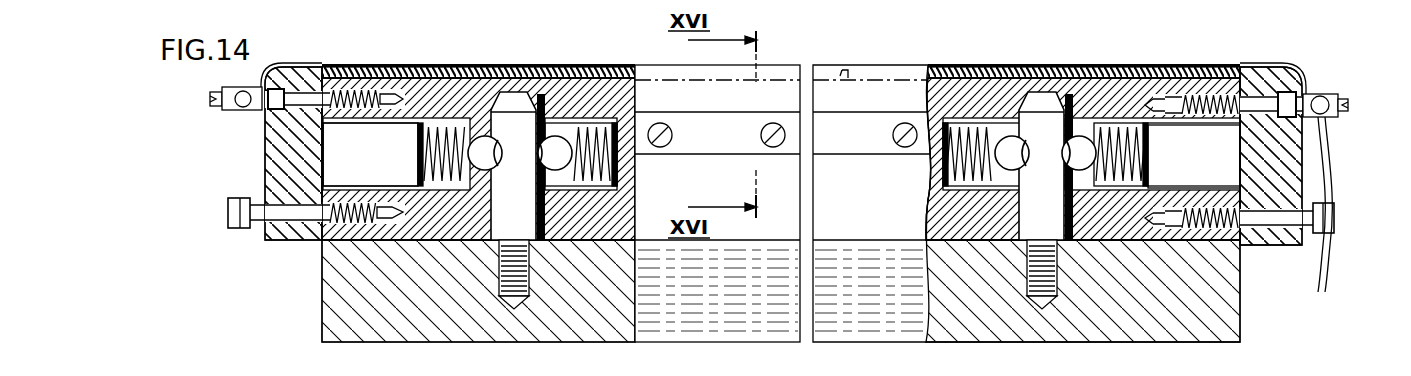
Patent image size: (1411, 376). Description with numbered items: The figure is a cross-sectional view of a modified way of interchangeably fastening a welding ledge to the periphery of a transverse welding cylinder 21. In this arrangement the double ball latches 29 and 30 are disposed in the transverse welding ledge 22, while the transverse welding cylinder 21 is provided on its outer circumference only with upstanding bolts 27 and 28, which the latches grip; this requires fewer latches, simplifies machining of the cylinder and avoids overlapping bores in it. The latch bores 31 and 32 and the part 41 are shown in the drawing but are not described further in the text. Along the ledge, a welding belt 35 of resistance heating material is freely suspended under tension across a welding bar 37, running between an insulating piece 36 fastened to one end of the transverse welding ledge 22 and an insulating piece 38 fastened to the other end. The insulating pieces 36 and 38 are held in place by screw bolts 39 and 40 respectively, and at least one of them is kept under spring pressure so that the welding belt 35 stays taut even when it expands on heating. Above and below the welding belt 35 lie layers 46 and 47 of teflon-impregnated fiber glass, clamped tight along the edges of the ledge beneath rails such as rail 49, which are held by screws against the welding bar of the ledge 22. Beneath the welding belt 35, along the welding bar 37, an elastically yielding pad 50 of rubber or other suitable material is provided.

The transverse welding cylinder 21 is at (322, 285).
The transverse welding ledge 22 is at (780, 63).
The upstanding bolt 27 is at (514, 92).
The upstanding bolt 28 is at (1046, 94).
The double ball latch 29 is at (437, 124).
The double ball latch 30 is at (1000, 134).
The bore 31 is at (400, 176).
The bore 32 is at (1168, 173).
The welding belt 35 is at (588, 64).
The insulating piece 36 is at (283, 144).
The welding bar 37 is at (416, 78).
The insulating piece 38 is at (1302, 170).
The screw bolt 39 is at (238, 213).
The screw bolt 40 is at (1272, 222).
The wire 41 is at (1322, 290).
The layer of teflon-impregnated fiber glass 46 is at (1145, 68).
The layer of teflon-impregnated fiber glass 47 is at (928, 72).
The rail 49 is at (840, 154).
The elastically yielding pad 50 is at (991, 68).